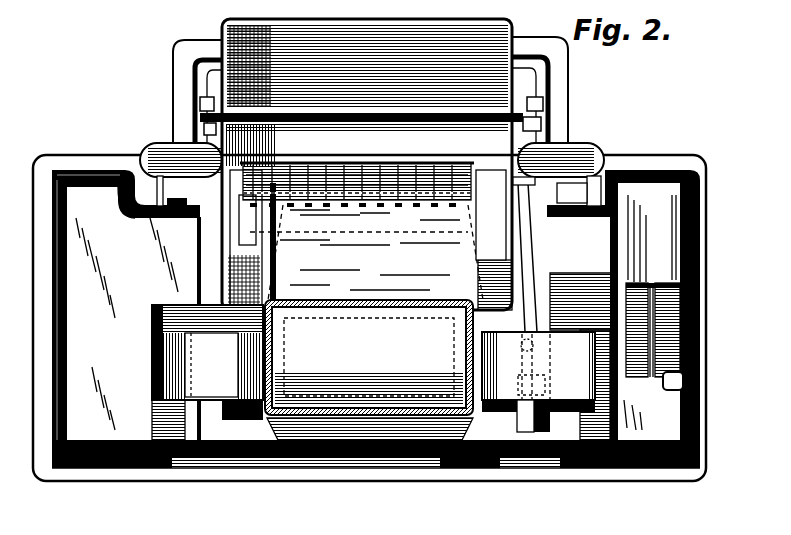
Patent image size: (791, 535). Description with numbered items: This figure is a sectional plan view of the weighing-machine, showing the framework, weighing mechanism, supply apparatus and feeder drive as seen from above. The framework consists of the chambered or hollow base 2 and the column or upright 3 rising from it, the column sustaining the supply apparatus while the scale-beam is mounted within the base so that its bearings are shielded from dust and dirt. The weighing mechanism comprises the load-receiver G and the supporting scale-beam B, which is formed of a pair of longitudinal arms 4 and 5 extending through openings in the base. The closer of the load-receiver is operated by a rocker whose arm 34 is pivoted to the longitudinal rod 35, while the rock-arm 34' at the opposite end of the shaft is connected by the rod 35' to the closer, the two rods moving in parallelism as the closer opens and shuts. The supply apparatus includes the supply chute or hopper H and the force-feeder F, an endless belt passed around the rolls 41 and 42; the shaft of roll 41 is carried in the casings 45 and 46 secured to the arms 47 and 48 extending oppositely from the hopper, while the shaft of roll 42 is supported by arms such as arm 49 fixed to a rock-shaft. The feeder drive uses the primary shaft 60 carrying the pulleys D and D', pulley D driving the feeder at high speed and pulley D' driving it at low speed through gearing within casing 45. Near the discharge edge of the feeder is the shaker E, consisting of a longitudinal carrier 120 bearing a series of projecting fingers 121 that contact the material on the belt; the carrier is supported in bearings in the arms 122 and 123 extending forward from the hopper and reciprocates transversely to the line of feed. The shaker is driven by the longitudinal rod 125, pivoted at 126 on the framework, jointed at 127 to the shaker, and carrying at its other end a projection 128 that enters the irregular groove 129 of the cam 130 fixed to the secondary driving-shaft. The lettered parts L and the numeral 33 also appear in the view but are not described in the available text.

The chambered base 2 is at (192, 491).
The joint 127 is at (547, 168).
The beam-arm 4 is at (144, 220).
The scale-beam B is at (150, 190).
The beam-arm 5 is at (598, 197).
The casing L is at (367, 164).
The shaft 33 is at (361, 130).
The load-receiver G is at (220, 78).
The rock-arm 34' is at (172, 110).
The rod 35' is at (173, 132).
The rocker arm 34 is at (559, 90).
The longitudinal rod 35 is at (565, 114).
The longitudinal carrier 120 is at (262, 200).
The arm 49 is at (236, 238).
The drum or roll 42 is at (285, 240).
The shaker E is at (398, 205).
The projecting fingers 121 is at (419, 163).
The force-feeder F is at (359, 250).
The arm 122 is at (270, 258).
The arm 123 is at (452, 252).
The longitudinal rod 125 is at (522, 254).
The supply chute or hopper H is at (331, 328).
The column or upright 3 is at (333, 470).
The casing 45 is at (157, 468).
The drum or roll 41 is at (463, 470).
The casing 46 is at (596, 468).
The arm 47 is at (207, 372).
The arm 48 is at (538, 372).
The pivot 126 is at (534, 345).
The projection 128 is at (538, 393).
The cam 130 is at (508, 468).
The irregular groove 129 is at (533, 468).
The driver pulley D is at (674, 308).
The driver pulley D' is at (661, 304).
The primary shaft 60 is at (684, 337).